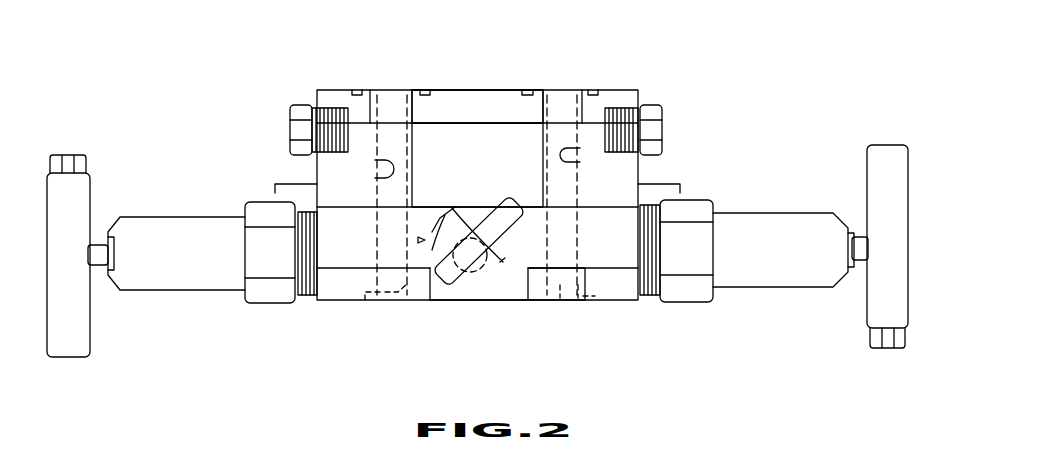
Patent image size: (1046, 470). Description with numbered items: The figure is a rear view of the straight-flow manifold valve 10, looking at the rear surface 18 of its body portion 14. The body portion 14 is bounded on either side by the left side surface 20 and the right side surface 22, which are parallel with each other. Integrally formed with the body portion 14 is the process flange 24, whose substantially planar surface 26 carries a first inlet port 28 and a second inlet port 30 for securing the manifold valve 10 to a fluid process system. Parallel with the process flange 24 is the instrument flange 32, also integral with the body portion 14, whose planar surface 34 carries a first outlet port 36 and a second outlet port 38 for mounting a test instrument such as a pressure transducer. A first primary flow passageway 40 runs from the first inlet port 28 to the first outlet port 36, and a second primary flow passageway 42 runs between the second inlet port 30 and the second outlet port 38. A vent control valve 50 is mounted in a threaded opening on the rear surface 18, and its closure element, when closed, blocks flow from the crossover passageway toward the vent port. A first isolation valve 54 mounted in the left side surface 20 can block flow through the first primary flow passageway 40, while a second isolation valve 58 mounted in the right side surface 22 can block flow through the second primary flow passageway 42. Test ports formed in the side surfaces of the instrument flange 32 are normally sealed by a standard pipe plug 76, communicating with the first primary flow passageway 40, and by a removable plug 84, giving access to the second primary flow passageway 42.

The straight-flow manifold valve 10 is at (226, 86).
The body portion 14 is at (615, 177).
The rear surface 18 is at (494, 175).
The left side surface 20 is at (638, 193).
The right side surface 22 is at (317, 193).
The process flange 24 is at (556, 293).
The planar surface 26 is at (448, 303).
The first inlet port 28 is at (568, 303).
The second inlet port 30 is at (397, 298).
The instrument flange 32 is at (494, 120).
The planar surface 34 is at (424, 90).
The first outlet port 36 is at (563, 90).
The second outlet port 38 is at (393, 90).
The first primary flow passageway 40 is at (580, 162).
The second primary flow passageway 42 is at (375, 163).
The vent control valve 50 is at (436, 268).
The first isolation valve 54 is at (790, 253).
The second isolation valve 58 is at (190, 260).
The pipe plug 76 is at (664, 128).
The removable plug 84 is at (290, 132).